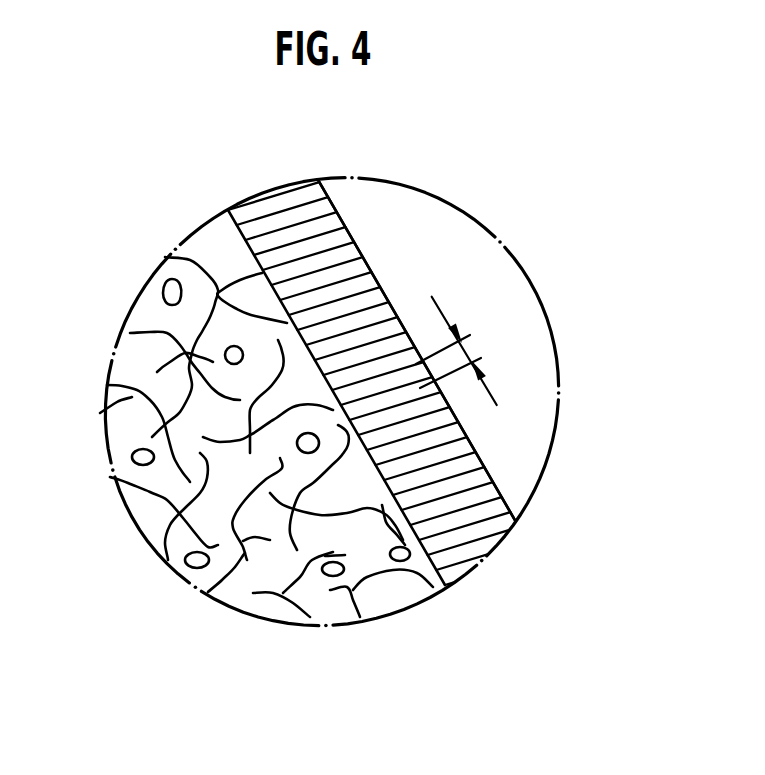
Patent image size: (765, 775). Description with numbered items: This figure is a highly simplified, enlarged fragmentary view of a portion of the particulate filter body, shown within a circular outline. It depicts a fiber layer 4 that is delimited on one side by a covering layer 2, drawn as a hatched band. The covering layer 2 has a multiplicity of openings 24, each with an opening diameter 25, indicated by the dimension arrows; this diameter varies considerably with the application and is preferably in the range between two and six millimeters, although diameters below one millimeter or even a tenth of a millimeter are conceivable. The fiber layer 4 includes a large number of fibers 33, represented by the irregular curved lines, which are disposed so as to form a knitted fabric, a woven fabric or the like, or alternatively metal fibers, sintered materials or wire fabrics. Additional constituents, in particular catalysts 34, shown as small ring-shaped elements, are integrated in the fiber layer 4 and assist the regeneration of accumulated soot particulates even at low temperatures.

The covering layer 2 is at (343, 227).
The fiber layer 4 is at (383, 595).
The openings 24 is at (490, 530).
The opening diameter 25 is at (470, 337).
The fibers 33 is at (137, 395).
The catalysts 34 is at (137, 457).